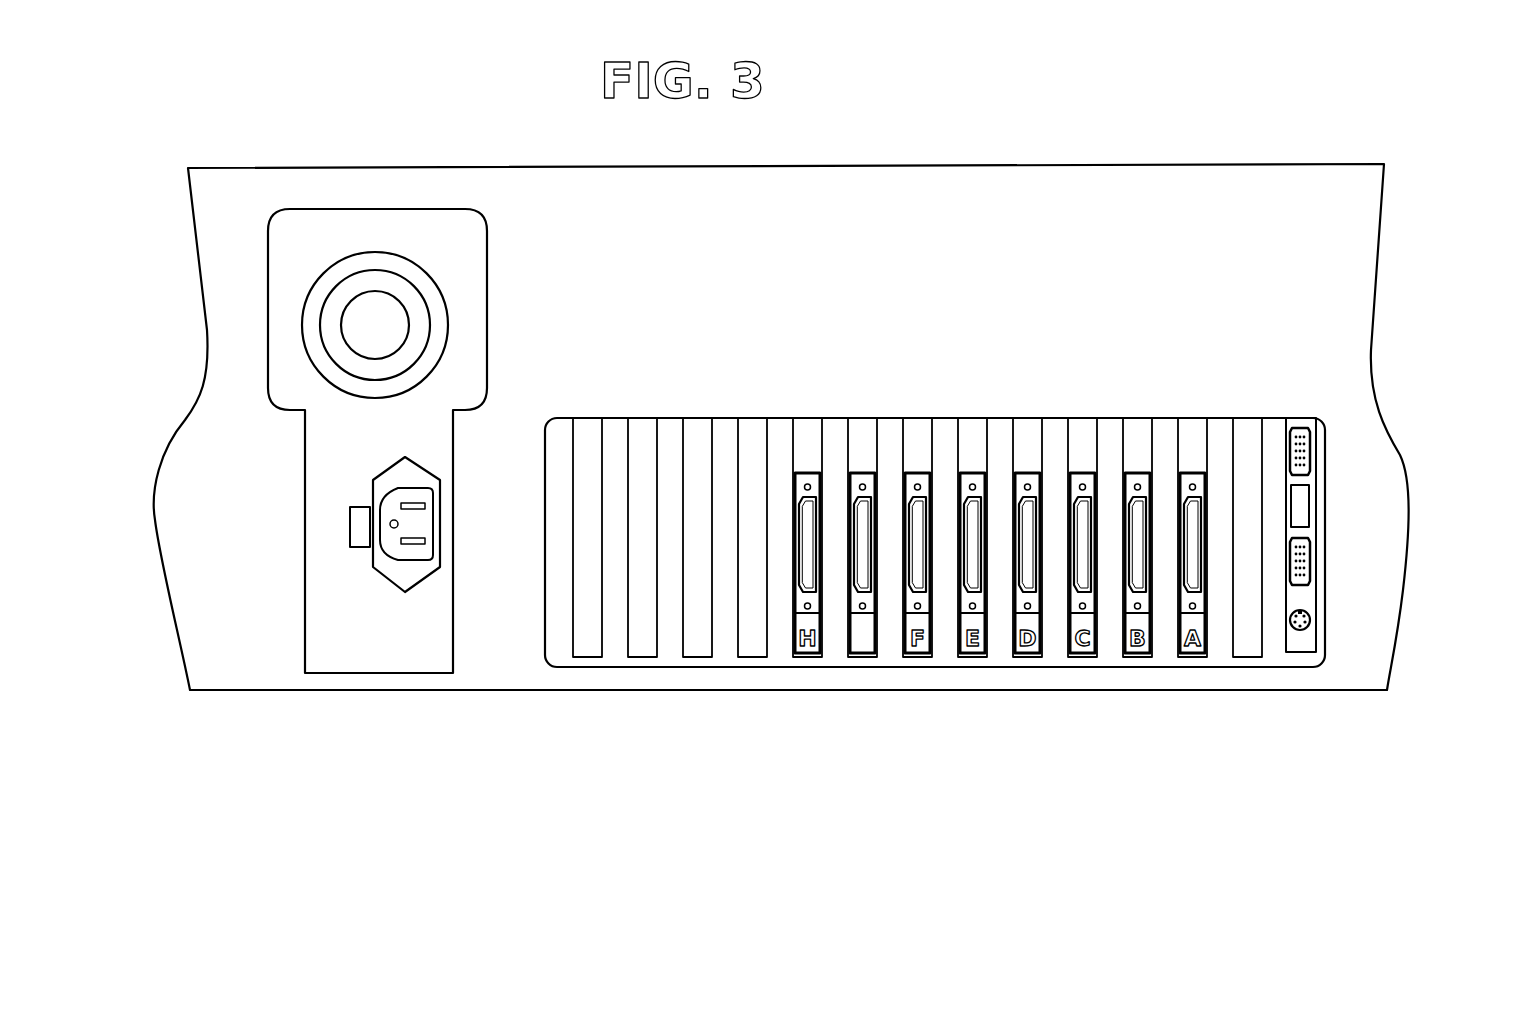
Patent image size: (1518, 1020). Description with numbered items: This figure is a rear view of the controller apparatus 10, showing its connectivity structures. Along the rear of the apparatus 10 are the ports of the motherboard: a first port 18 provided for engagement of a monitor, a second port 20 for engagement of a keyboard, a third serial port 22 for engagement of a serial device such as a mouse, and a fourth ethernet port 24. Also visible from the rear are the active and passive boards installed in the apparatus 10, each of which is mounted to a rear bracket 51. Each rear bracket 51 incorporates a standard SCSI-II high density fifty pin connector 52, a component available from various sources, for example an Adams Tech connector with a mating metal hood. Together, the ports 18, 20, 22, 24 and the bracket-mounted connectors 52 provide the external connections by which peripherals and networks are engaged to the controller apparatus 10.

The controller apparatus 10 is at (1021, 167).
The first port 18 is at (1311, 451).
The second port 20 is at (1311, 504).
The third serial port 22 is at (1313, 624).
The fourth ethernet port 24 is at (1311, 562).
The rear bracket 51 is at (872, 494).
The SCSI-II high density 50 pin connector 52 is at (866, 558).